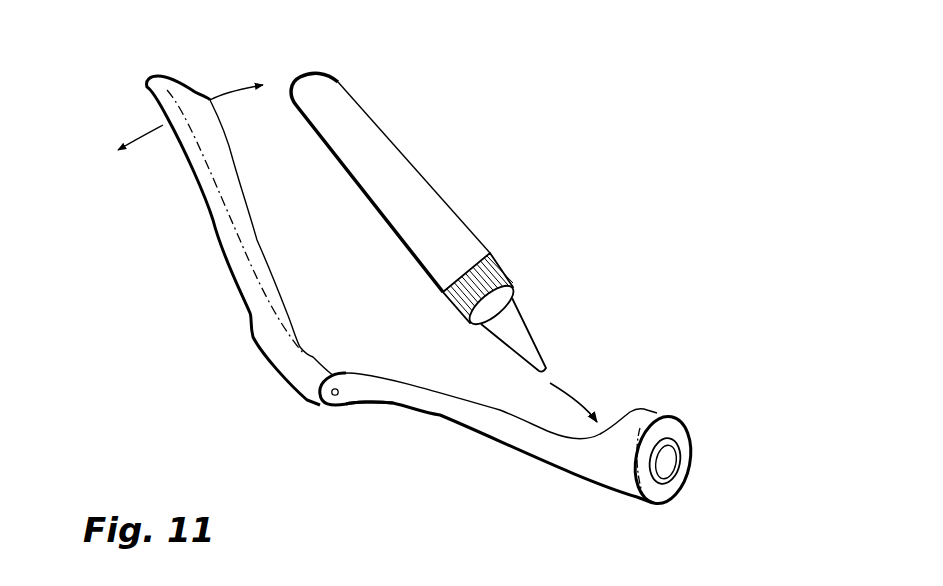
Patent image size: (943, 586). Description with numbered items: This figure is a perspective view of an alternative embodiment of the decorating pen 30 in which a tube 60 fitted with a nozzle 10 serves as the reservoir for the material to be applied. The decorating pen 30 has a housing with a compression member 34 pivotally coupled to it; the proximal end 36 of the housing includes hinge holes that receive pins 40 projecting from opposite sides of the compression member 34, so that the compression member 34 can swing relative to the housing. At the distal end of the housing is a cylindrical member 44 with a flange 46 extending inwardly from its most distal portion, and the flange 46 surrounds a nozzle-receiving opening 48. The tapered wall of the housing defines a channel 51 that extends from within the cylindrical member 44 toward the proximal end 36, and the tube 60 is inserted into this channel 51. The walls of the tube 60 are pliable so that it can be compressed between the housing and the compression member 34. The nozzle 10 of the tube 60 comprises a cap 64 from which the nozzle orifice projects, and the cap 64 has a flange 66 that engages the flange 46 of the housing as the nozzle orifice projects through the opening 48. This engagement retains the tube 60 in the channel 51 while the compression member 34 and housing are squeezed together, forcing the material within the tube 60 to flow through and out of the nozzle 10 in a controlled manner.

The nozzle 10 is at (552, 343).
The decorating pen 30 is at (490, 475).
The compression member 34 is at (223, 213).
The proximal end 36 is at (350, 397).
The pins 40 is at (335, 393).
The cylindrical member 44 is at (660, 417).
The flange 46 is at (678, 436).
The nozzle-receiving opening 48 is at (660, 460).
The channel 51 is at (450, 387).
The tube 60 is at (423, 197).
The cap 64 is at (490, 270).
The flange 66 is at (512, 290).